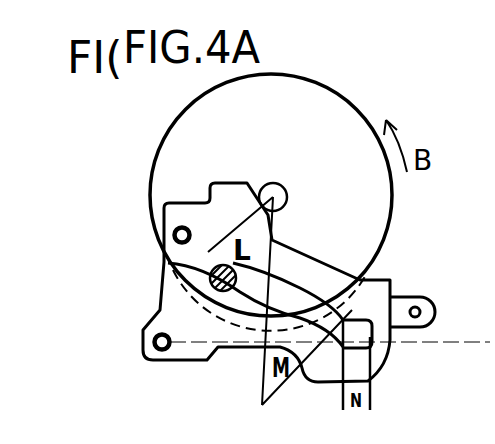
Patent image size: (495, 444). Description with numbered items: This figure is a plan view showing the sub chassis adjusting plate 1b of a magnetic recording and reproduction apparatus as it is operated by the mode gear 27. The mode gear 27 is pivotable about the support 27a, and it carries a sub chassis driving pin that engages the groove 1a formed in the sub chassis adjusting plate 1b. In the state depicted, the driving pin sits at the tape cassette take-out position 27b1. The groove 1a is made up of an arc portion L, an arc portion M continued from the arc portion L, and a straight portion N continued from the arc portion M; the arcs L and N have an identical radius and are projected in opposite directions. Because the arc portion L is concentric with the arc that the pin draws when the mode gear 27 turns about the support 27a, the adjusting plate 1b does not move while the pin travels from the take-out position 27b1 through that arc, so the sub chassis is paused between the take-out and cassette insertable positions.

The mode gear 27 is at (353, 108).
The support 27a is at (275, 195).
The tape cassette take-out position 27b1 is at (221, 274).
The groove 1a is at (357, 328).
The sub chassis adjusting plate 1b is at (367, 353).